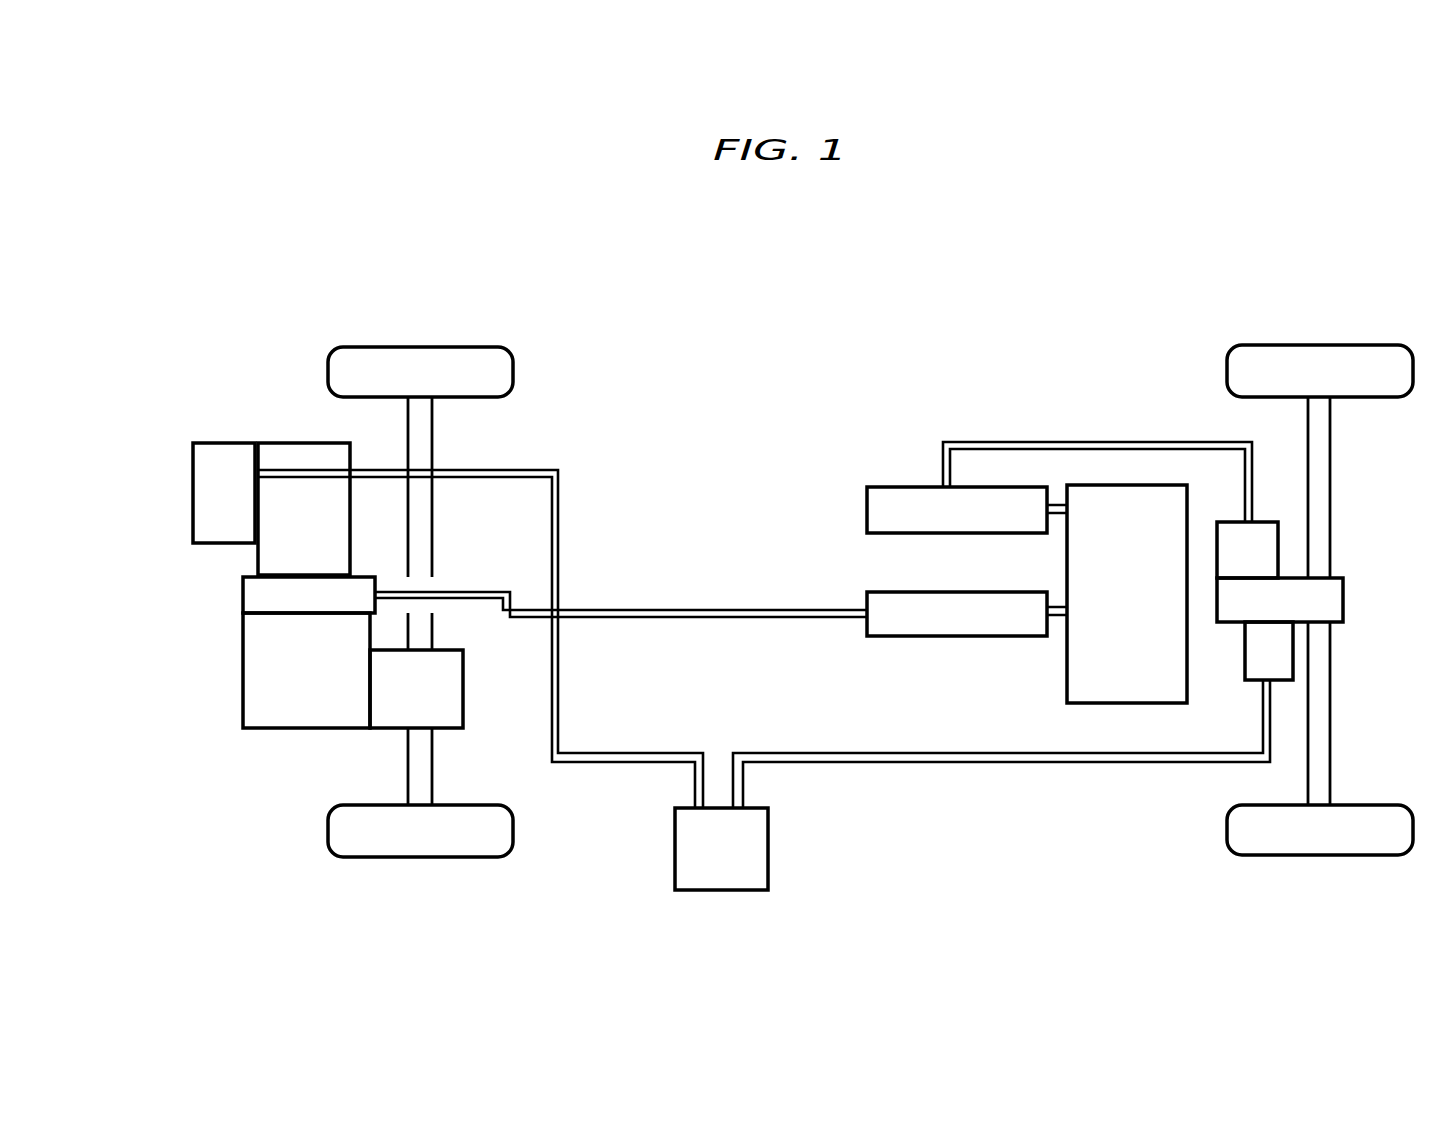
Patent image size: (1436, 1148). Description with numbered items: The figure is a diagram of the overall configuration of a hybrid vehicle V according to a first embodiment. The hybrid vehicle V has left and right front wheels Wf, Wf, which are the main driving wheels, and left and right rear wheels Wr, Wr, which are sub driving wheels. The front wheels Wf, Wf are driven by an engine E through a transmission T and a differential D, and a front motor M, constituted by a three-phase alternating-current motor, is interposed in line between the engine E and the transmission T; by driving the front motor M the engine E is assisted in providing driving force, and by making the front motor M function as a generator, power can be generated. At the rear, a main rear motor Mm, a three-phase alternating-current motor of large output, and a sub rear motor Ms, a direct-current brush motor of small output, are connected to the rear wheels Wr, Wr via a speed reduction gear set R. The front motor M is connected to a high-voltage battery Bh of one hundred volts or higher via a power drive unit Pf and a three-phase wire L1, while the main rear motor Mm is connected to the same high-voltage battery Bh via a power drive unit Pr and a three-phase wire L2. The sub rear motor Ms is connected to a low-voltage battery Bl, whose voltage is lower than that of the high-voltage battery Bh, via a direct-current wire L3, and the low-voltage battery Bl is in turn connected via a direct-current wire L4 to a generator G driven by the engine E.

The hybrid vehicle V is at (832, 392).
The front wheels Wf is at (420, 345).
The rear wheels Wr is at (1318, 345).
The engine E is at (305, 443).
The generator G is at (193, 495).
The front motor M is at (243, 590).
The transmission T is at (243, 668).
The differential D is at (463, 687).
The three-phase wire L1 is at (716, 618).
The three-phase wire L2 is at (1092, 442).
The direct-current wire L3 is at (955, 763).
The direct-current wire L4 is at (558, 543).
The power drive unit Pf is at (867, 600).
The power drive unit Pr is at (867, 508).
The high-voltage battery Bh is at (1067, 668).
The low-voltage battery Bl is at (675, 848).
The main rear motor Mm is at (1258, 520).
The sub rear motor Ms is at (1245, 652).
The speed reduction gear set R is at (1343, 600).